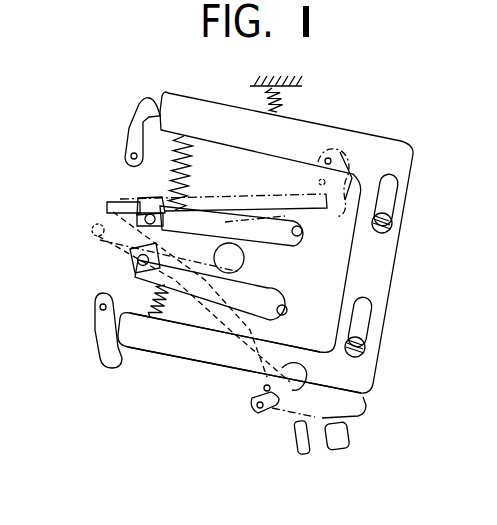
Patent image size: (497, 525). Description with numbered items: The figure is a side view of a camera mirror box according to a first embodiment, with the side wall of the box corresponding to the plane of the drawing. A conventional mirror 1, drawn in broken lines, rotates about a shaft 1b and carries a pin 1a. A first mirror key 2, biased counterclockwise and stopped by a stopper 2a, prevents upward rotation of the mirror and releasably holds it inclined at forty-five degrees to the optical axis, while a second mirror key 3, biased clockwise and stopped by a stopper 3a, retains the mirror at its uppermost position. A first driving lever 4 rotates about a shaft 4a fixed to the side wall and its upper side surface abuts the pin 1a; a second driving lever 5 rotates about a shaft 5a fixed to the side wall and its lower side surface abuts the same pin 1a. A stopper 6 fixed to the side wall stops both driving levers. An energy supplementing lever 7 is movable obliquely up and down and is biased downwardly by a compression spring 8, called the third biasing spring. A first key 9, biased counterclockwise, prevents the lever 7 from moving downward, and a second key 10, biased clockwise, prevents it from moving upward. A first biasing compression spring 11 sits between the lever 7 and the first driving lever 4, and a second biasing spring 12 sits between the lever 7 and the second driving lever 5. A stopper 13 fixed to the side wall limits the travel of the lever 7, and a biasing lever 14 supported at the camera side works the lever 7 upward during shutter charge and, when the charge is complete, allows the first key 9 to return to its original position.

The mirror 1 is at (223, 333).
The pin 1a is at (137, 260).
The shaft 1b is at (92, 228).
The first mirror key 2 is at (272, 416).
The stopper 2a is at (262, 388).
The second mirror key 3 is at (347, 160).
The stopper 3a is at (320, 182).
The first driving lever 4 is at (257, 294).
The shaft 4a is at (288, 311).
The second driving lever 5 is at (285, 240).
The shaft 5a is at (302, 232).
The stopper 6 is at (220, 255).
The energy supplementing lever 7 is at (385, 277).
The compression spring 8 is at (283, 108).
The first key 9 is at (98, 323).
The second key 10 is at (133, 136).
The first biasing compression spring 11 is at (148, 295).
The second biasing spring 12 is at (170, 181).
The stopper 13 is at (335, 450).
The biasing lever 14 is at (300, 456).